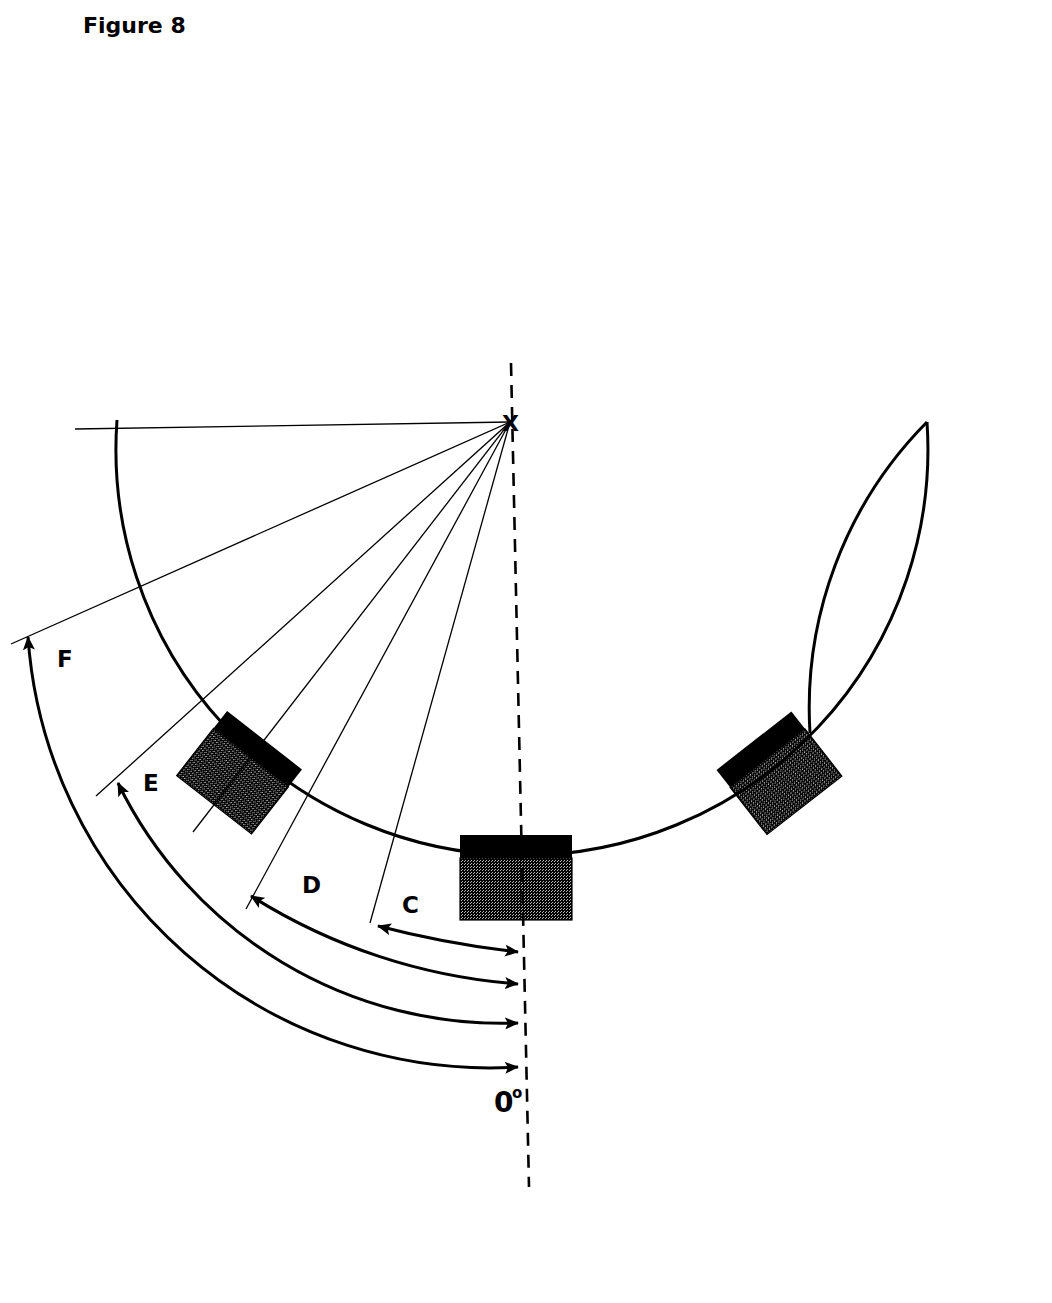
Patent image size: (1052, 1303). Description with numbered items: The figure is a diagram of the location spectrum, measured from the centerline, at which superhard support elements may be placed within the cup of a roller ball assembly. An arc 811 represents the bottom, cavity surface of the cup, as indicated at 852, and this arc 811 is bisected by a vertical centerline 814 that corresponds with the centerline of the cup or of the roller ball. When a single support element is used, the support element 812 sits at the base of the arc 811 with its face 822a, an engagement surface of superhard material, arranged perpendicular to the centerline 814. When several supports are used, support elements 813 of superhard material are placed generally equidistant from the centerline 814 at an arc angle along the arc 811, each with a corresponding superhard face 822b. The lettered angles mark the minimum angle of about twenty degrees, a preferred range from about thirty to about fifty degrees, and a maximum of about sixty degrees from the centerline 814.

The arc 811 is at (112, 547).
The cup cavity surface 852 is at (917, 517).
The support elements 813 is at (509, 684).
The face 822a is at (545, 836).
The detector collimator band 822b is at (737, 750).
The support element 812 is at (537, 895).
The vertical centerline 814 is at (532, 1043).